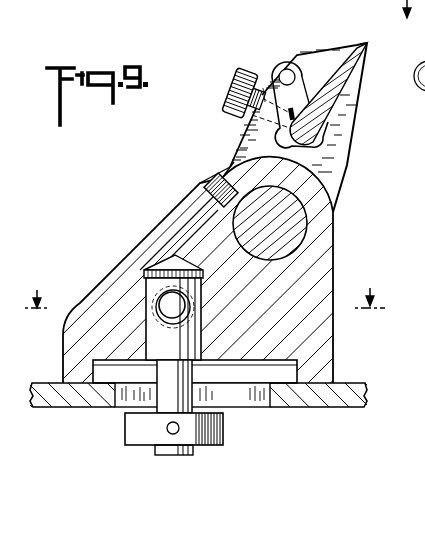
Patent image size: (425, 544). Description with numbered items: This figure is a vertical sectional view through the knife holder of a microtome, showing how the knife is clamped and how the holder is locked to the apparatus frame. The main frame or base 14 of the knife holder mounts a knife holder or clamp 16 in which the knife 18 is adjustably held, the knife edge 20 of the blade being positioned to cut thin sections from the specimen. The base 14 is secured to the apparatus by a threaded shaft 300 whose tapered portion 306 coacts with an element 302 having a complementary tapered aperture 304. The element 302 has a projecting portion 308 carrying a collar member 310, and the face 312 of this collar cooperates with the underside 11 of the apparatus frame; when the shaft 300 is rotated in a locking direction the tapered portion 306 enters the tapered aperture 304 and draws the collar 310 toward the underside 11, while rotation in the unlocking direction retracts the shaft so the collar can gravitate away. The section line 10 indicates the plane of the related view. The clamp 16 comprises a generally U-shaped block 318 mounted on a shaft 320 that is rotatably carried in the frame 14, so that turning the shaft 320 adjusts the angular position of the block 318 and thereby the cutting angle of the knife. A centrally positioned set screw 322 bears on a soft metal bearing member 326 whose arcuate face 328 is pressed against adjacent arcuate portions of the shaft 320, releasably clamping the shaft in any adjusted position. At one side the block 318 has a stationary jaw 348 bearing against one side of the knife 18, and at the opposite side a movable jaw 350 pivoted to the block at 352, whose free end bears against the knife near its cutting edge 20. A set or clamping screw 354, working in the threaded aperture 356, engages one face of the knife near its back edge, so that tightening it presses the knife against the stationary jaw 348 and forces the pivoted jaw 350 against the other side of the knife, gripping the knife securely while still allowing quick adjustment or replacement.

The section line marker 10 is at (225, 167).
The underside of the frame 11 is at (60, 407).
The main frame or base 14 is at (122, 252).
The knife holder or clamp 16 is at (226, 103).
The knife 18 is at (340, 128).
The knife edge 20 is at (367, 43).
The threaded shaft 300 is at (158, 313).
The element 302 is at (162, 340).
The tapered aperture 304 is at (193, 332).
The tapered portion 306 is at (188, 300).
The projecting portion 308 is at (200, 405).
The collar member 310 is at (137, 438).
The face of the collar 312 is at (133, 413).
The U-shaped block 318 is at (250, 124).
The shaft 320 is at (282, 222).
The set screw 322 is at (200, 184).
The soft metal bearing member 326 is at (233, 170).
The arcuate face 328 is at (217, 213).
The stationary jaw 348 is at (343, 163).
The movable jaw 350 is at (303, 63).
The pivot 352 is at (287, 69).
The set or clamping screw 354 is at (245, 71).
The threaded aperture 356 is at (266, 100).